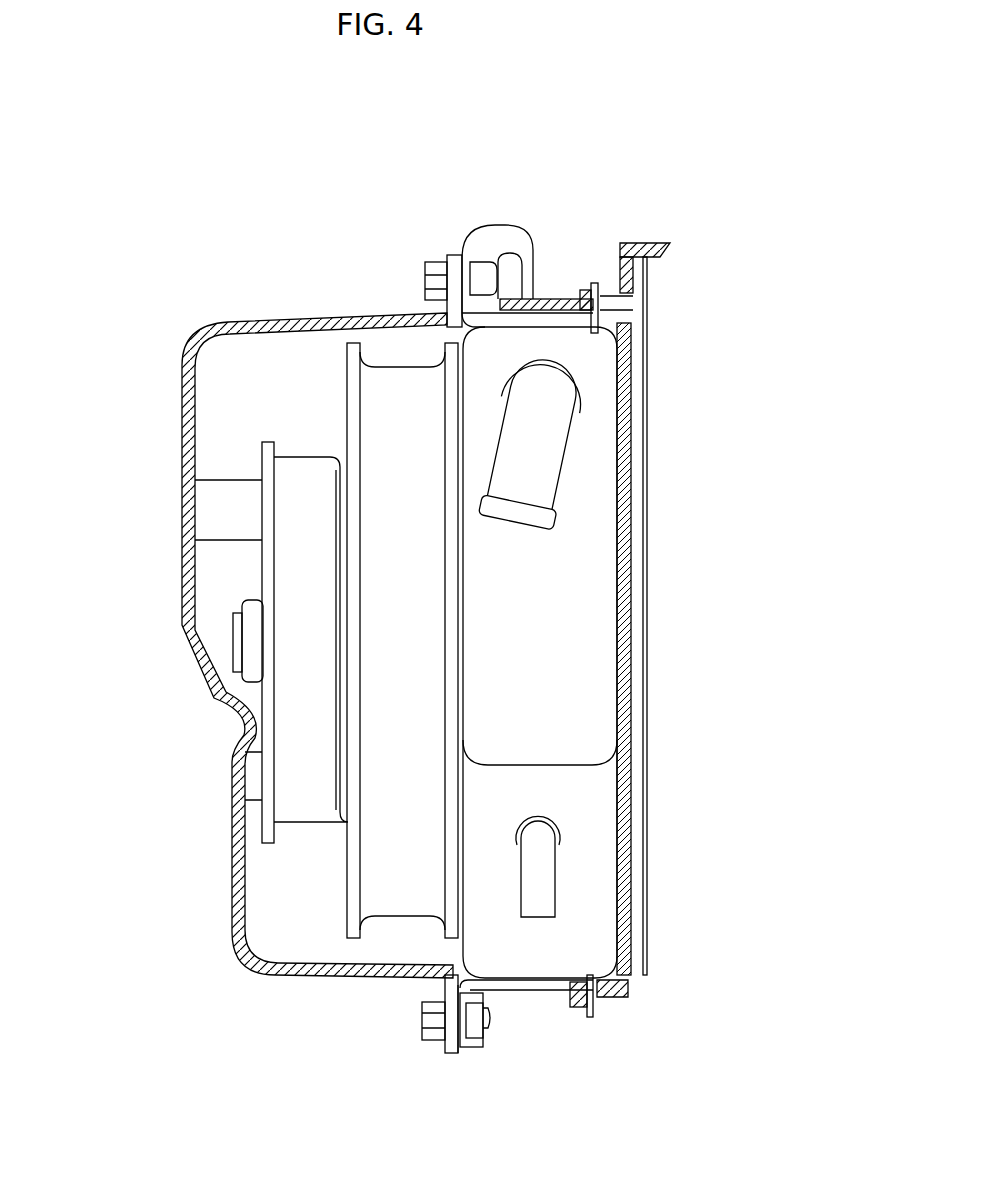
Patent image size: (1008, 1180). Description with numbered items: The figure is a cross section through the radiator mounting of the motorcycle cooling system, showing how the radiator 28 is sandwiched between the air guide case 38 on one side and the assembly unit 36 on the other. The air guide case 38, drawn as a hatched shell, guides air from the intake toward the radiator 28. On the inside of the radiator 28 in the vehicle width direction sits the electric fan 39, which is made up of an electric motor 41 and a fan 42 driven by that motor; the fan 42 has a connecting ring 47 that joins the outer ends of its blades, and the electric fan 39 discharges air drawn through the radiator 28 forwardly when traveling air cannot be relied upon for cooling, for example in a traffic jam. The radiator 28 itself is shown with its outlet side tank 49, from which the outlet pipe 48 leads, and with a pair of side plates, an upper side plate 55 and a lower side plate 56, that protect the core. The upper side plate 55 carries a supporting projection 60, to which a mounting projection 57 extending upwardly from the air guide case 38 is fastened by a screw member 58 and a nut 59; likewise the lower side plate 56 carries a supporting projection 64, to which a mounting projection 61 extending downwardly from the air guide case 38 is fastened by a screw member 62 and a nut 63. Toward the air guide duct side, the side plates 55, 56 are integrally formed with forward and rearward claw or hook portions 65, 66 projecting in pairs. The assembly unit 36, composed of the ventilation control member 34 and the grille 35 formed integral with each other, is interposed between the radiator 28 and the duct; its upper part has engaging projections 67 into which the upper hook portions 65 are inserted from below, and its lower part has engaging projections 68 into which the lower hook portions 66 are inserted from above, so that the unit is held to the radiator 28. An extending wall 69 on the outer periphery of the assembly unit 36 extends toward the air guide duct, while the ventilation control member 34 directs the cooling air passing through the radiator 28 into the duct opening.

The radiator 28 is at (387, 577).
The ventilation control member 34 is at (630, 270).
The grille 35 is at (622, 547).
The assembly unit 36 is at (733, 574).
The air guide case 38 is at (182, 415).
The electric fan 39 is at (320, 794).
The electric motor 41 is at (297, 793).
The fan 42 is at (404, 930).
The connecting ring 47 is at (415, 385).
The outlet pipe 48 is at (527, 502).
The outlet side tank 49 is at (492, 703).
The upper side plate 55 is at (535, 298).
The lower side plate 56 is at (530, 990).
The mounting projection 57 is at (452, 257).
The screw member 58 is at (430, 262).
The nut 59 is at (485, 262).
The supporting projection 60 is at (472, 225).
The mounting projection 61 is at (452, 1055).
The screw member 62 is at (428, 1025).
The nut 63 is at (474, 1038).
The supporting projection 64 is at (459, 1048).
The upper claw or hook portion 65 is at (596, 283).
The lower claw or hook portion 66 is at (594, 1010).
The engaging projection 67 is at (600, 330).
The engaging projection 68 is at (610, 997).
The extending wall 69 is at (662, 243).